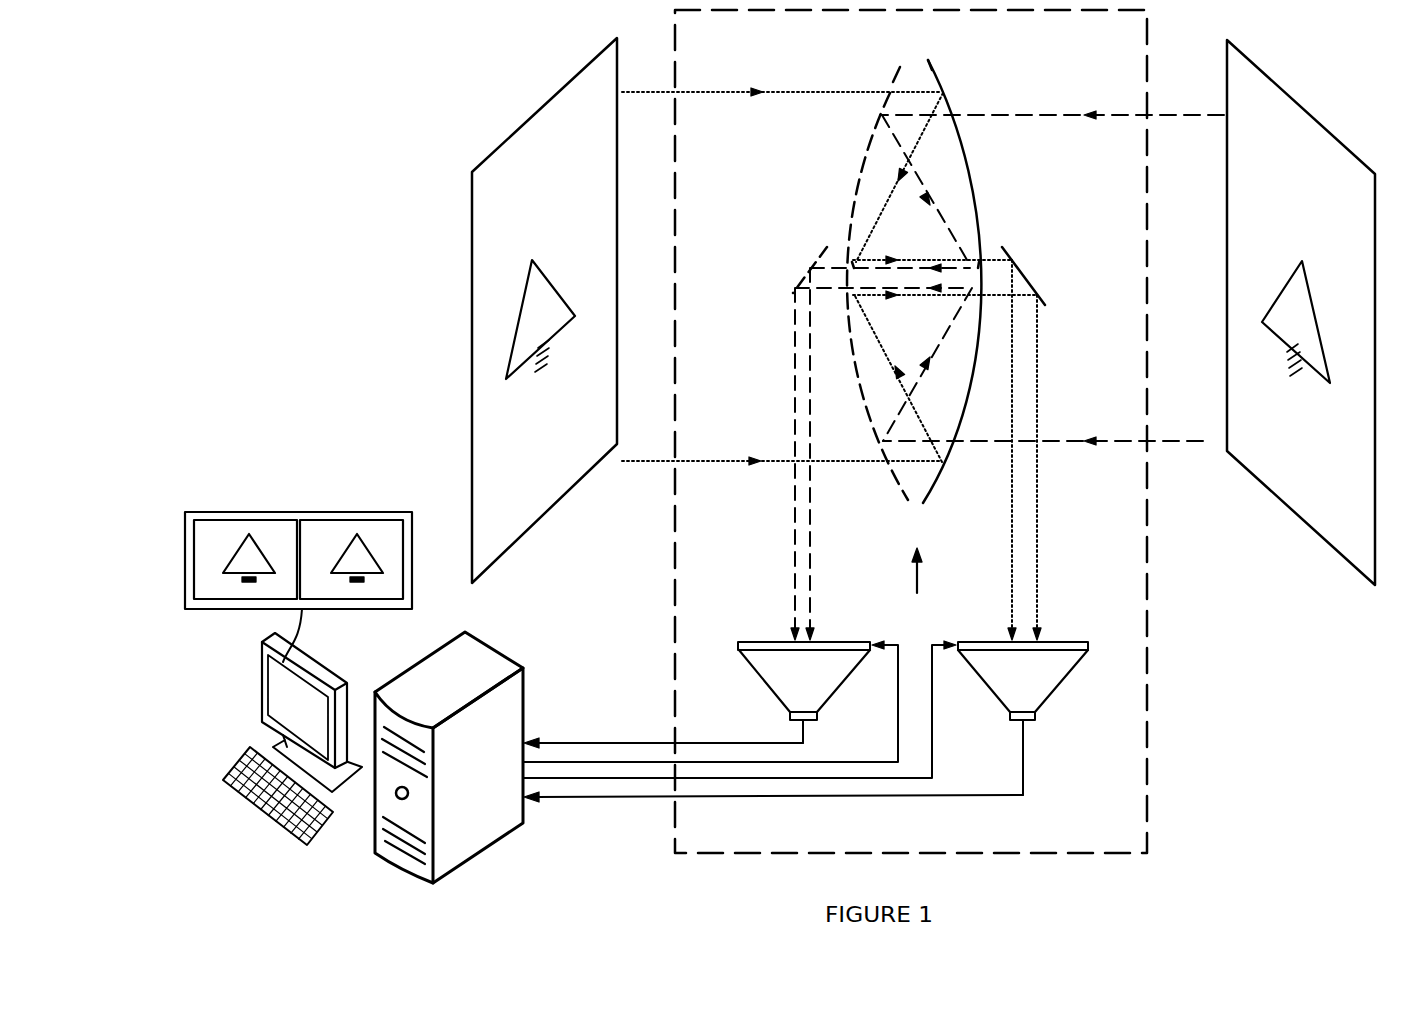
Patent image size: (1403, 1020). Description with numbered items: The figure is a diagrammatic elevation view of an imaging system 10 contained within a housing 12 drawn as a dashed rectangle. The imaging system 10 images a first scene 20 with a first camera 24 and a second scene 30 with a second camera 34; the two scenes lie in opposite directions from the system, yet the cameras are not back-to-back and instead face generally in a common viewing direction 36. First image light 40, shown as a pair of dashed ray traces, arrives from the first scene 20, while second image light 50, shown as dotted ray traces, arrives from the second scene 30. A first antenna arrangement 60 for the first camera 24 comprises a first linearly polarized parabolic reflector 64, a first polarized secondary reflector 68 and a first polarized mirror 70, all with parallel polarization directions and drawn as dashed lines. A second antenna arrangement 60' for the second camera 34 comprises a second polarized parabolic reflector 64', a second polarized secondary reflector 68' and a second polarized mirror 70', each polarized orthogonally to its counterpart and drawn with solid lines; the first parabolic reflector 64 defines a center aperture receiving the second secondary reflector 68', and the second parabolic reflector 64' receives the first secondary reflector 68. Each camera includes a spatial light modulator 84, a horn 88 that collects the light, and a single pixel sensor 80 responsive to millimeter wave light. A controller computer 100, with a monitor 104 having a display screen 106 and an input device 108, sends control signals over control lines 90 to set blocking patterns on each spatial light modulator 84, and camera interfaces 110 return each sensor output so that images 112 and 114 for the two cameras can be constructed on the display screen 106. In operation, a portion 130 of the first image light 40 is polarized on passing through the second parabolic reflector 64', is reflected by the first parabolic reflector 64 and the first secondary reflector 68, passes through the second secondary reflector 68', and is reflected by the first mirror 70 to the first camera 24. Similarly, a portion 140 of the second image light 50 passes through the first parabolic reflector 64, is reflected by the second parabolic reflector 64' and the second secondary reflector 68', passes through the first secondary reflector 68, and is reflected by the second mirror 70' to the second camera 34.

The imaging system 10 is at (1165, 33).
The housing 12 is at (1147, 760).
The first scene 20 is at (1311, 528).
The first camera 24 is at (792, 685).
The second scene 30 is at (523, 533).
The second camera 34 is at (1088, 647).
The common viewing direction 36 is at (917, 577).
The first image light 40 is at (1161, 113).
The second image light 50 is at (660, 94).
The first antenna arrangement 60 is at (854, 296).
The second antenna arrangement 60' is at (974, 281).
The first linearly polarized parabolic reflector 64 is at (869, 68).
The second linearly polarized parabolic reflector 64' is at (963, 67).
The first polarized secondary reflector 68 is at (1000, 233).
The second polarized secondary reflector 68' is at (824, 234).
The first polarized mirror 70 is at (791, 275).
The second polarized mirror 70' is at (1046, 276).
The single pixel sensor 80 is at (792, 717).
The spatial light modulator 84 is at (738, 647).
The horn 88 is at (757, 675).
The control lines 90 is at (837, 762).
The controller computer 100 is at (510, 648).
The monitor 104 is at (321, 659).
The display screen 106 is at (294, 578).
The input device 108 is at (323, 824).
The camera interfaces 110 is at (590, 743).
The first camera image 112 is at (192, 560).
The second camera image 114 is at (405, 570).
The polarized transmitted light 130 is at (900, 115).
The transmitted light 140 is at (918, 93).